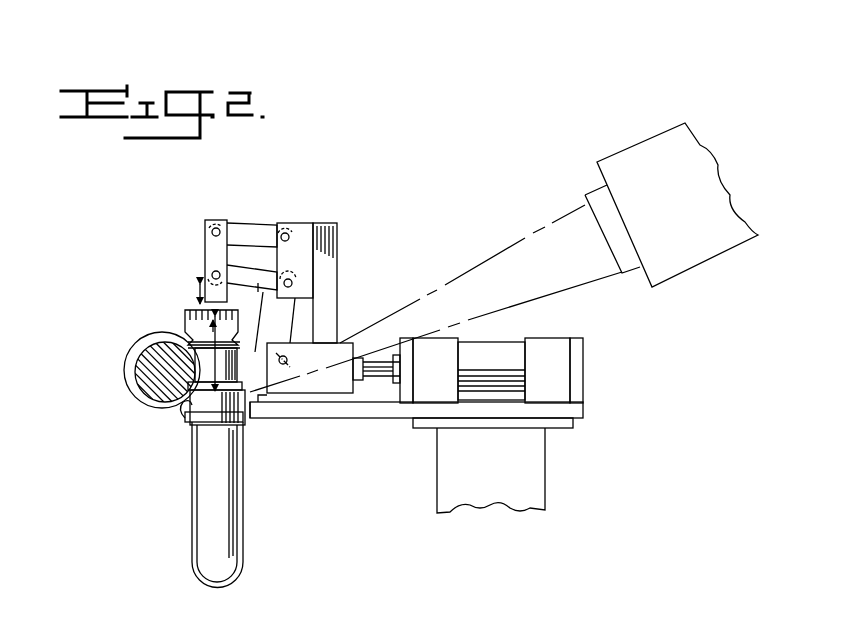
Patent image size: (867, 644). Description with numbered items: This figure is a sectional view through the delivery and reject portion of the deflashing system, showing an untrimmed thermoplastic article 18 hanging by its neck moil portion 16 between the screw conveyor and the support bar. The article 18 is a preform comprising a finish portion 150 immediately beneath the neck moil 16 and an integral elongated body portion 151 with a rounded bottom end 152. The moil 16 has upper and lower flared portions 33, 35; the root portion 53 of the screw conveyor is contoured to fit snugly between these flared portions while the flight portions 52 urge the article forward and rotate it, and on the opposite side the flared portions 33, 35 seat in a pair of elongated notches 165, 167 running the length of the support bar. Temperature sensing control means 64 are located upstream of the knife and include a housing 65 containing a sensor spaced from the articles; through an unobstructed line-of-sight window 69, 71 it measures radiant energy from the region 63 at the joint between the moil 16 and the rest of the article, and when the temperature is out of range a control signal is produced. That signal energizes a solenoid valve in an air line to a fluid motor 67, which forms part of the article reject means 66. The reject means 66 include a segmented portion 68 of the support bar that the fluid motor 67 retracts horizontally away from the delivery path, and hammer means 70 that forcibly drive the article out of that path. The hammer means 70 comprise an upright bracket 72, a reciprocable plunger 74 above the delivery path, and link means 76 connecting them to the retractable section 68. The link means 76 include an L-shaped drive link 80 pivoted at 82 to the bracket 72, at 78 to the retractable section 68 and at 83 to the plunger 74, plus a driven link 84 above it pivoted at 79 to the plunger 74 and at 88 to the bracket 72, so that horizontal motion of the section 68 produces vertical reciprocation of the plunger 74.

The neck moil portion 16 is at (215, 353).
The article 18 is at (216, 521).
The upper flared portion 33 is at (233, 345).
The lower flared portion 35 is at (228, 413).
The flight portions 52 is at (132, 355).
The root portion 53 is at (148, 398).
The region 63 is at (260, 410).
The temperature sensing control means 64 is at (580, 130).
The housing 65 is at (642, 146).
The article reject means 66 is at (338, 214).
The fluid motor 67 is at (560, 352).
The segmented portion 68 is at (330, 393).
The window line 69 is at (464, 270).
The hammer means 70 is at (266, 253).
The window line 71 is at (530, 300).
The upright bracket 72 is at (333, 252).
The reciprocable plunger 74 is at (205, 258).
The link means 76 is at (257, 216).
The pivot 78 is at (290, 352).
The pivot 79 is at (217, 228).
The L-shaped drive link 80 is at (258, 309).
The pivot 82 is at (292, 282).
The pivot 83 is at (211, 276).
The driven link 84 is at (262, 232).
The pivot 88 is at (286, 232).
The finish portion 150 is at (184, 410).
The body portion 151 is at (243, 528).
The rounded bottom end 152 is at (212, 604).
The elongated notch 165 is at (228, 327).
The elongated notch 167 is at (322, 364).